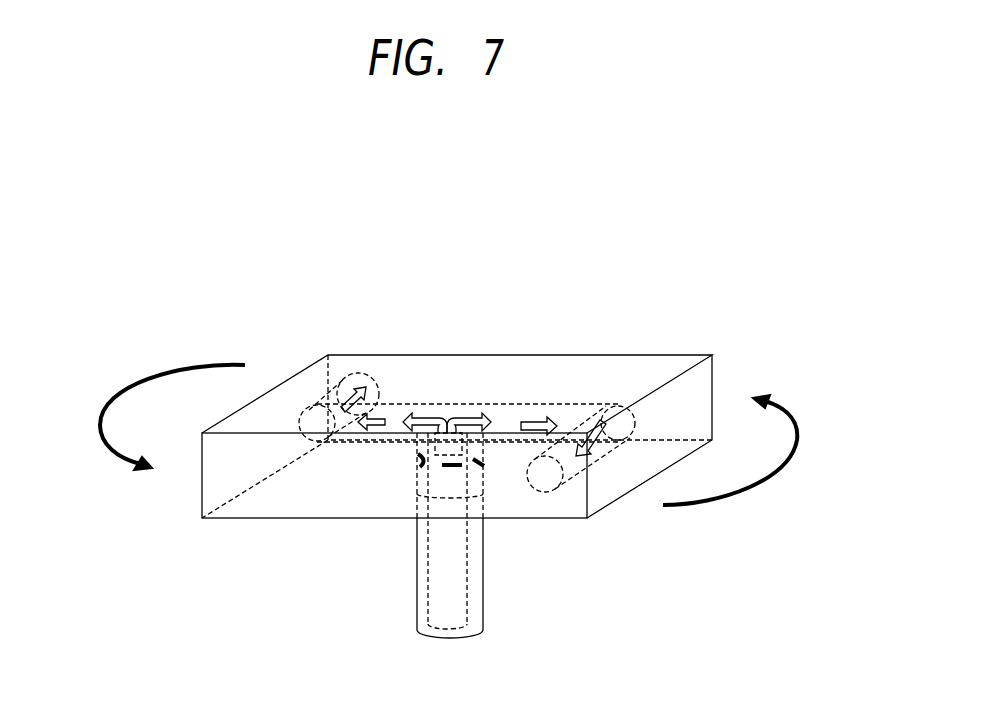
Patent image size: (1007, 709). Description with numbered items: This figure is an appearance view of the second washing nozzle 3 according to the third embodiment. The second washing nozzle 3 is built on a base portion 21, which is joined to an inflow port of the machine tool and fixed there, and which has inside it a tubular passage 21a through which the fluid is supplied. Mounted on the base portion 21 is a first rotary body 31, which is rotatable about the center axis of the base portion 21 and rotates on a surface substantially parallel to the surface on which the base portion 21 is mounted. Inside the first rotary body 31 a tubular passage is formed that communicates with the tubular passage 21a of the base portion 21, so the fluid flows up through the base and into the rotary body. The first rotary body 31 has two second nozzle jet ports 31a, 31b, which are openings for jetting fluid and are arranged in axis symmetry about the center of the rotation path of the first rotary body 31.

The second washing nozzle 3 is at (588, 333).
The first rotary body 31 is at (655, 363).
The second nozzle jet port 31a is at (550, 478).
The second nozzle jet port 31b is at (366, 381).
The base portion 21 is at (417, 557).
The tubular passage 21a is at (460, 548).